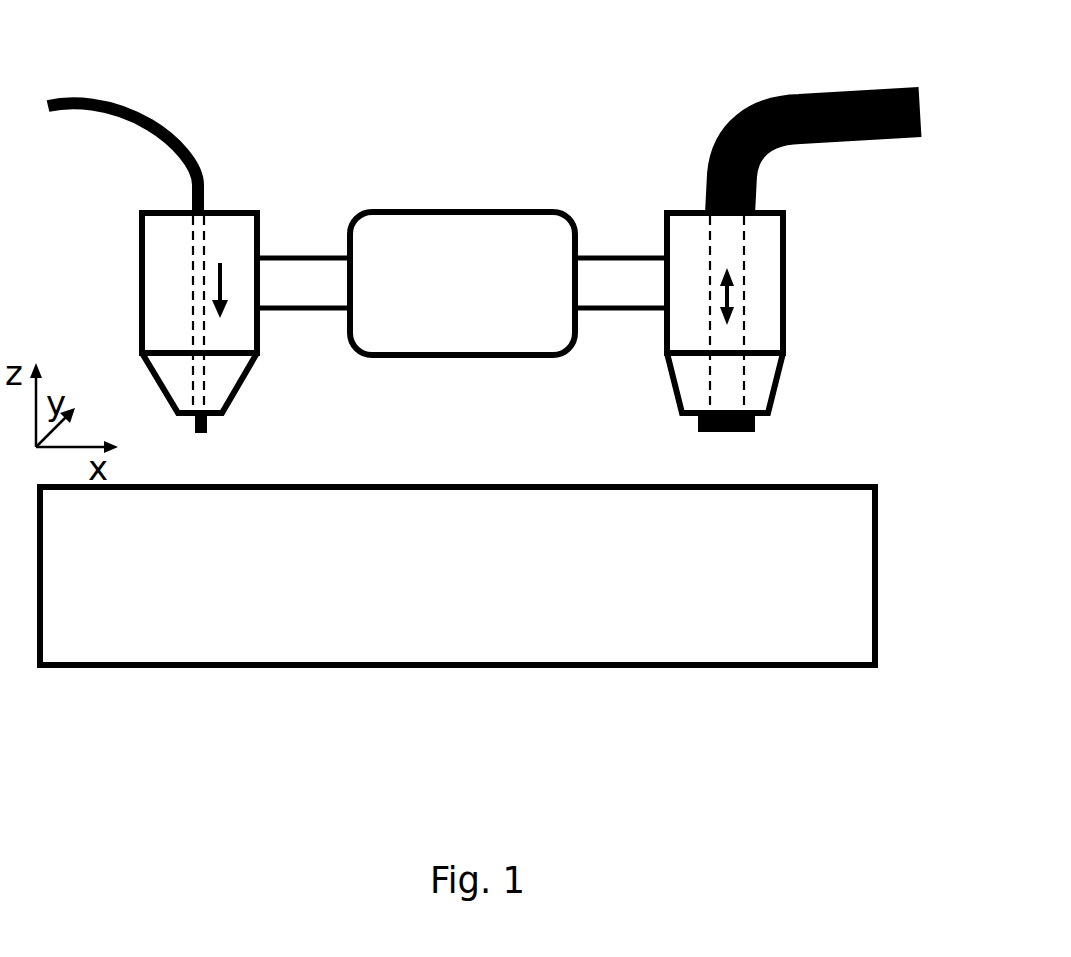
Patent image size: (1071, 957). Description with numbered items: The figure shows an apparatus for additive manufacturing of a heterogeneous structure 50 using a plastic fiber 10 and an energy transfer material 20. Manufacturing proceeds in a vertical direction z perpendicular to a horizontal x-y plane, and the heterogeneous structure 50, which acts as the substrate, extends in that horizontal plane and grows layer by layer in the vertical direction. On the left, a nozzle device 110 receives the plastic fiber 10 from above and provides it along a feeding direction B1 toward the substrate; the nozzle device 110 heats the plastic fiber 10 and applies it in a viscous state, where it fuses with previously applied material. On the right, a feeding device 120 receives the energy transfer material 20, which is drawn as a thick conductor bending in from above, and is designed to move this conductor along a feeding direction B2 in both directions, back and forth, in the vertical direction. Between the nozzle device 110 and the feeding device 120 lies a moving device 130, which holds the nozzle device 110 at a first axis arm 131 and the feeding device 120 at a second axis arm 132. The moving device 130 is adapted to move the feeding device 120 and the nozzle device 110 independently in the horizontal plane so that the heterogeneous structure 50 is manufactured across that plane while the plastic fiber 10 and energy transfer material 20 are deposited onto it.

The plastic fiber 10 is at (127, 97).
The energy transfer material 20 is at (843, 88).
The heterogeneous structure 50 is at (712, 667).
The nozzle device 110 is at (227, 235).
The feeding device 120 is at (765, 255).
The moving device 130 is at (423, 210).
The first axis arm 131 is at (290, 277).
The second axis arm 132 is at (612, 275).
The feeding direction B1 is at (200, 293).
The feeding direction B2 is at (730, 298).